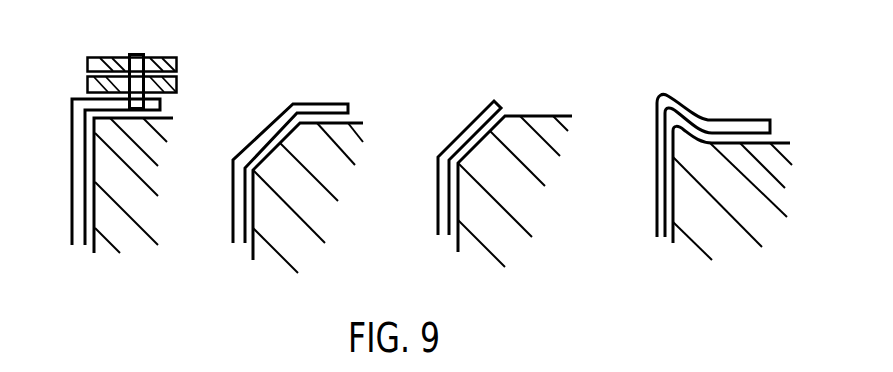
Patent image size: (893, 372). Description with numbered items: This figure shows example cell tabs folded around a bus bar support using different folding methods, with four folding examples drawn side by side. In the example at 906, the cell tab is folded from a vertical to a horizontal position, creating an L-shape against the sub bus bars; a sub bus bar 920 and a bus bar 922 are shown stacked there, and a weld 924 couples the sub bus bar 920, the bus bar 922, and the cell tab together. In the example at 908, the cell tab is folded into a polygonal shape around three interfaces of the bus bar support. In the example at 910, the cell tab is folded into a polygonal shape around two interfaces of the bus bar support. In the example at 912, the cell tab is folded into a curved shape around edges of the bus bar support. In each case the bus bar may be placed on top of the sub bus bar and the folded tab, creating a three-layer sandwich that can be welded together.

The L-shape folding example 906 is at (189, 78).
The three-interface polygonal folding example 908 is at (361, 78).
The two-interface polygonal folding example 910 is at (571, 79).
The curved folding example 912 is at (754, 79).
The sub bus bar 920 is at (88, 80).
The bus bar 922 is at (103, 57).
The weld 924 is at (135, 52).